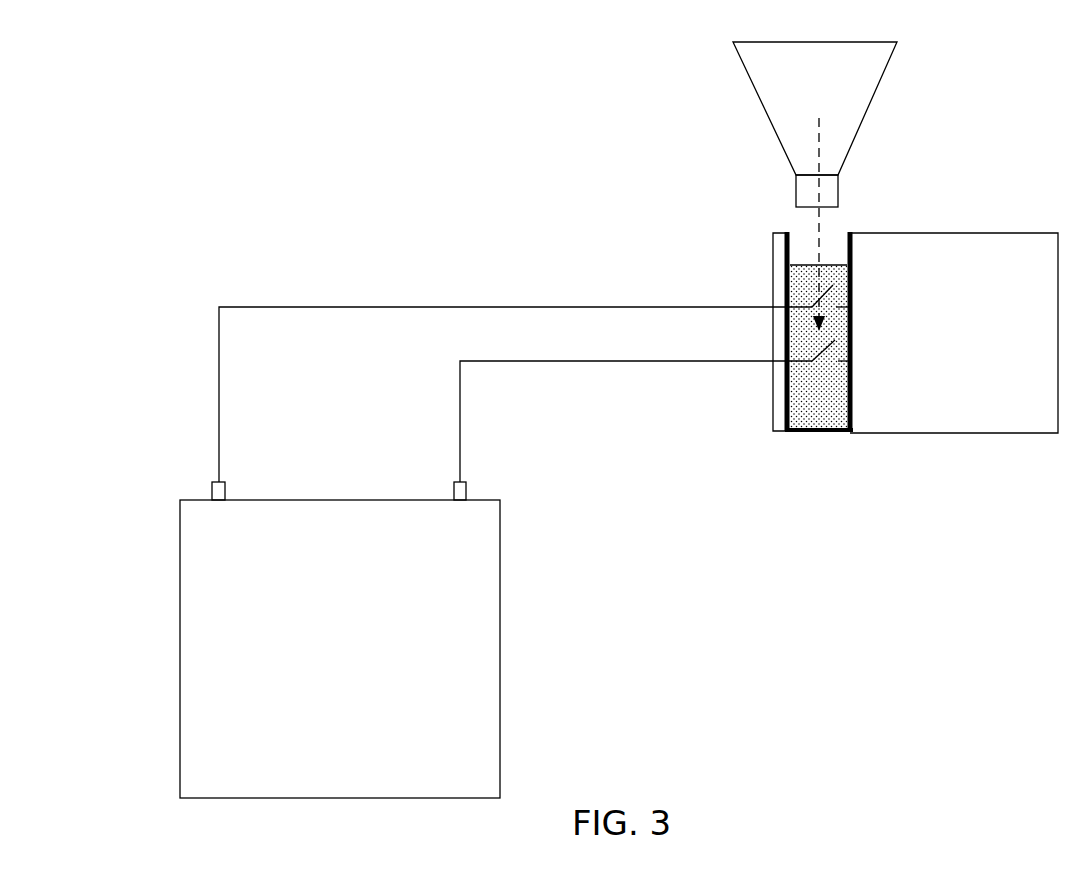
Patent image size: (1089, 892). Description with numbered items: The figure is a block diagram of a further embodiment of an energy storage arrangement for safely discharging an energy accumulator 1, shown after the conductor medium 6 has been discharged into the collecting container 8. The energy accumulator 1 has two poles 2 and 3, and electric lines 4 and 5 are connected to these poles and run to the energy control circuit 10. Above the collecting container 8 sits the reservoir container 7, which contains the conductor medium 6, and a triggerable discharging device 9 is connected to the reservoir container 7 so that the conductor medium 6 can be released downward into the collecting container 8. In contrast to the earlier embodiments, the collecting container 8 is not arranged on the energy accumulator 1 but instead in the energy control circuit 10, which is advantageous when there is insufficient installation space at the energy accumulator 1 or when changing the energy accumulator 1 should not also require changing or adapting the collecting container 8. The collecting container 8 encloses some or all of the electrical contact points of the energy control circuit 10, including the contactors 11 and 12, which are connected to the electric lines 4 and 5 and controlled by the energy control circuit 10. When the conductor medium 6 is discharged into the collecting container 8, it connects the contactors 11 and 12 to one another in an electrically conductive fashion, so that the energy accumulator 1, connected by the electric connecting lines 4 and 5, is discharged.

The energy accumulator 1 is at (468, 645).
The pole 2 is at (213, 485).
The pole 3 is at (461, 483).
The electric line 4 is at (533, 376).
The electric line 5 is at (654, 411).
The conductor medium 6 is at (825, 422).
The reservoir container 7 is at (745, 66).
The collecting container 8 is at (793, 432).
The triggerable discharging device 9 is at (800, 186).
The energy control circuit 10 is at (950, 260).
The contactor 11 is at (827, 224).
The contactor 12 is at (820, 346).